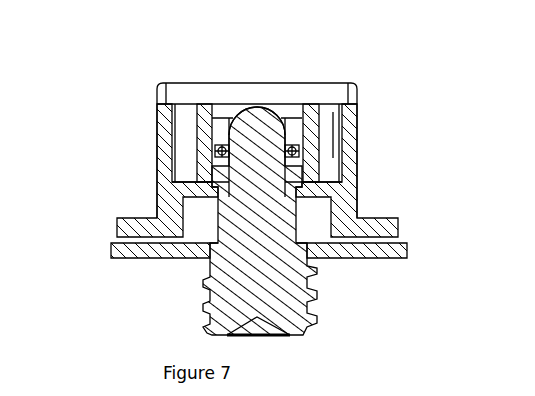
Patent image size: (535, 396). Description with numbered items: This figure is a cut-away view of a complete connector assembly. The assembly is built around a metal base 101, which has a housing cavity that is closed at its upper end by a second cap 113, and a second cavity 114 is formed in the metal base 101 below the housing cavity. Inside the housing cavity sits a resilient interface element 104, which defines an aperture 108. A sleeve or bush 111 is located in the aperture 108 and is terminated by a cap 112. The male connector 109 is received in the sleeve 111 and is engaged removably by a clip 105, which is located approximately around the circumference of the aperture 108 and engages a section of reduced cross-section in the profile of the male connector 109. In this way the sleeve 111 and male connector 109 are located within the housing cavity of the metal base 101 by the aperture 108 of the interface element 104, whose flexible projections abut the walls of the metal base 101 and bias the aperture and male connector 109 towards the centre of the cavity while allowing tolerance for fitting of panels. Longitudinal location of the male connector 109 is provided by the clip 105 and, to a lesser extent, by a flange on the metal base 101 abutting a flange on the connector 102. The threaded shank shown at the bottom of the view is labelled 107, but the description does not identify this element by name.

The metal base 101 is at (352, 160).
The connector 102 is at (128, 253).
The resilient interface element 104 is at (322, 122).
The clip 105 is at (302, 146).
The threaded shaft 107 is at (203, 287).
The aperture 108 is at (228, 150).
The male connector 109 is at (318, 180).
The sleeve 111 is at (300, 118).
The cap 112 is at (238, 113).
The second cap 113 is at (190, 88).
The second cavity 114 is at (318, 220).